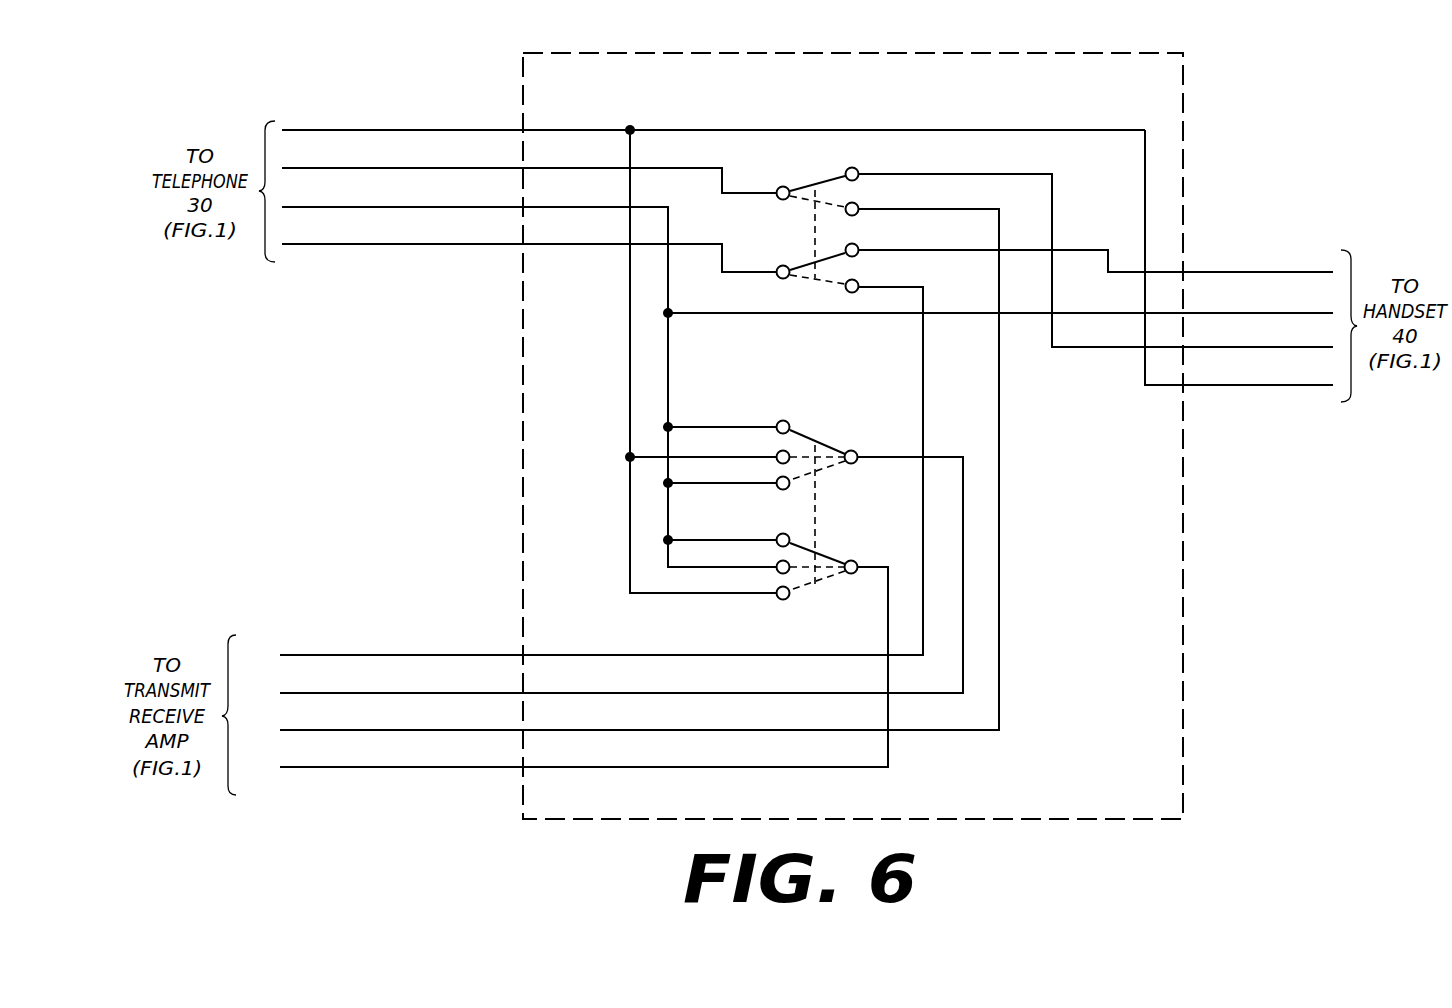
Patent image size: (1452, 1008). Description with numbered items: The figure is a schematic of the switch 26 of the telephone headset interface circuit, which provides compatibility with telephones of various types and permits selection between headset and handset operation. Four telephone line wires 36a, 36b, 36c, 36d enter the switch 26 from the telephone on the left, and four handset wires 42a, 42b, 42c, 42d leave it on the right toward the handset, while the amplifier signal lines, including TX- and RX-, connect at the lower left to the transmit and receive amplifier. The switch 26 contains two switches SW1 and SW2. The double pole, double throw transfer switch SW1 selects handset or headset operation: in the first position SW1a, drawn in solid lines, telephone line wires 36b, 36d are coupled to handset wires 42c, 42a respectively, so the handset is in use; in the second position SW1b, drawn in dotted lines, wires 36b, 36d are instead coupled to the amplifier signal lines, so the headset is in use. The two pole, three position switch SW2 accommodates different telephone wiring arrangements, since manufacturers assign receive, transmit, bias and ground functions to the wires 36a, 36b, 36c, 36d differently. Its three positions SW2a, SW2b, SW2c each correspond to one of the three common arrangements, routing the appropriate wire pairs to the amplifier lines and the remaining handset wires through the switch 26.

The switch 26 is at (1183, 53).
The telephone line wire 36a is at (342, 130).
The telephone line wire 36b is at (346, 168).
The telephone line wire 36c is at (350, 207).
The telephone line wire 36d is at (358, 244).
The handset wire 42a is at (1252, 272).
The handset wire 42b is at (1255, 310).
The handset wire 42c is at (1258, 347).
The handset wire 42d is at (1260, 385).
The double pole, double throw transfer switch SW1 is at (811, 217).
The first position of transfer switch SW1a is at (835, 173).
The second position of transfer switch SW1b is at (805, 198).
The two pole, three position switch SW2 is at (824, 495).
The first position of switch SW2 SW2a is at (827, 443).
The second position of switch SW2 SW2b is at (796, 452).
The third position of switch SW2 SW2c is at (826, 467).
The amplifier signal line TX- is at (599, 581).
The amplifier signal line RX- is at (562, 673).